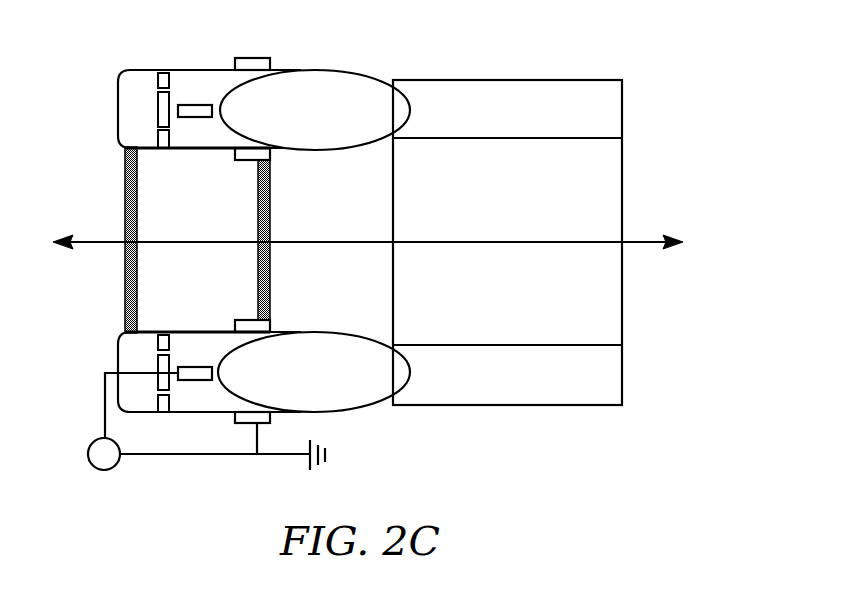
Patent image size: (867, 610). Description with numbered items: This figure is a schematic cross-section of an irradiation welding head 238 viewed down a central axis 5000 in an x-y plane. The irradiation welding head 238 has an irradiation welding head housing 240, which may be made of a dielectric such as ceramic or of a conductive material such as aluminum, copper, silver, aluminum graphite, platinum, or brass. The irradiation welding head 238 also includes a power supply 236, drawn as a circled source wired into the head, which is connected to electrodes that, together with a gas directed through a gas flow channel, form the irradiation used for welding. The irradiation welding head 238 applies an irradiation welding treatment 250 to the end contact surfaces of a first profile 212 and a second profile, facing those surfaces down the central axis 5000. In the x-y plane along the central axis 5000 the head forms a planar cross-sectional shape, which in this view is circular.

The first profile 212 is at (437, 106).
The power supply 236 is at (103, 463).
The irradiation welding head 238 is at (195, 83).
The irradiation welding head housing 240 is at (197, 152).
The irradiation welding treatment 250 is at (364, 73).
The central axis 5000 is at (640, 242).